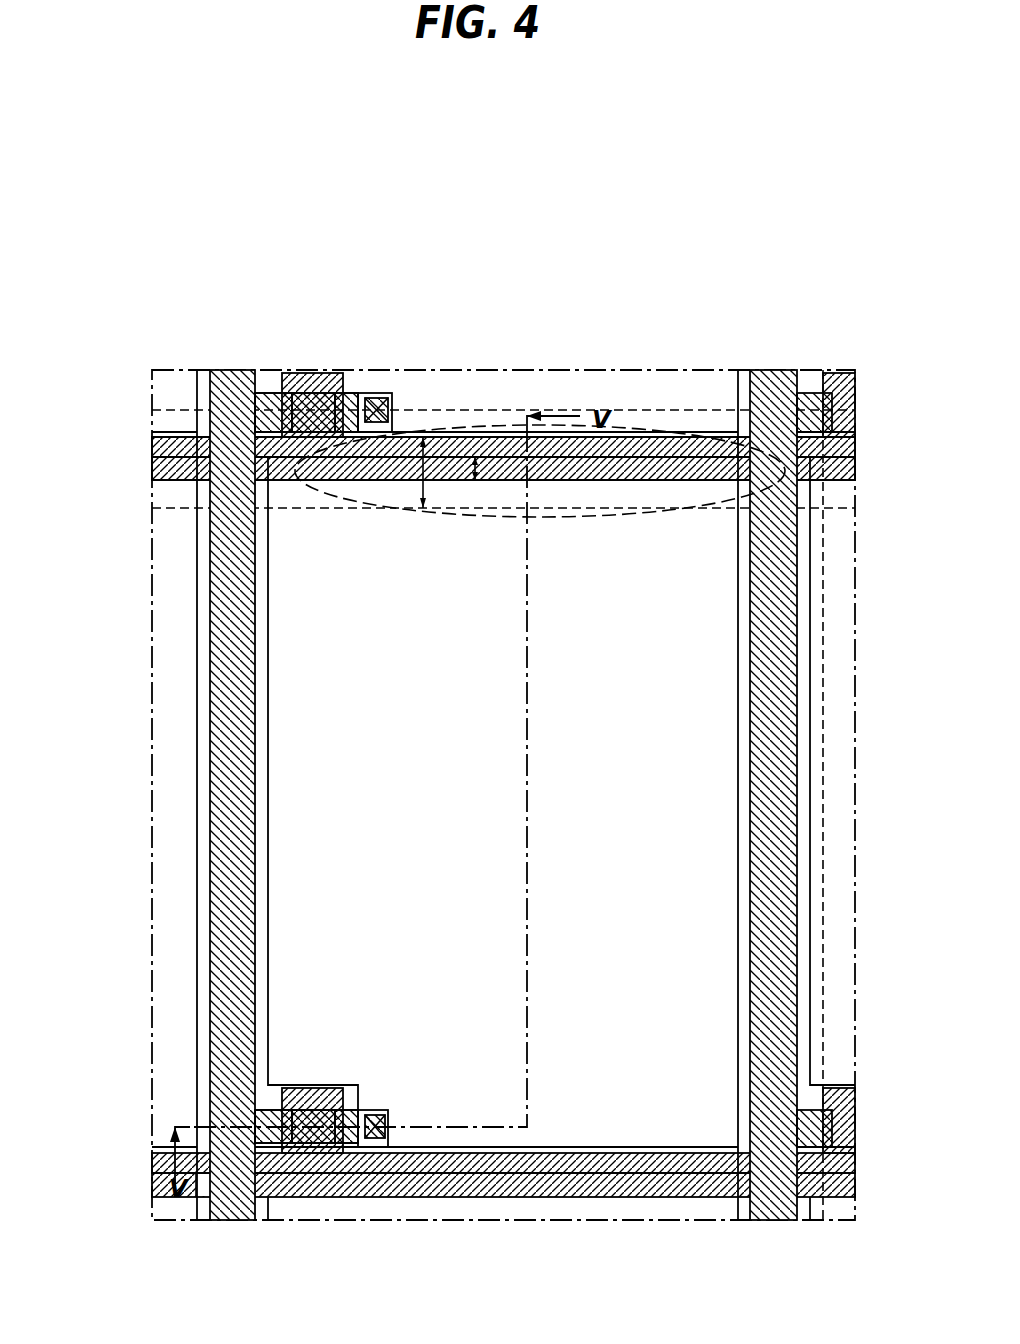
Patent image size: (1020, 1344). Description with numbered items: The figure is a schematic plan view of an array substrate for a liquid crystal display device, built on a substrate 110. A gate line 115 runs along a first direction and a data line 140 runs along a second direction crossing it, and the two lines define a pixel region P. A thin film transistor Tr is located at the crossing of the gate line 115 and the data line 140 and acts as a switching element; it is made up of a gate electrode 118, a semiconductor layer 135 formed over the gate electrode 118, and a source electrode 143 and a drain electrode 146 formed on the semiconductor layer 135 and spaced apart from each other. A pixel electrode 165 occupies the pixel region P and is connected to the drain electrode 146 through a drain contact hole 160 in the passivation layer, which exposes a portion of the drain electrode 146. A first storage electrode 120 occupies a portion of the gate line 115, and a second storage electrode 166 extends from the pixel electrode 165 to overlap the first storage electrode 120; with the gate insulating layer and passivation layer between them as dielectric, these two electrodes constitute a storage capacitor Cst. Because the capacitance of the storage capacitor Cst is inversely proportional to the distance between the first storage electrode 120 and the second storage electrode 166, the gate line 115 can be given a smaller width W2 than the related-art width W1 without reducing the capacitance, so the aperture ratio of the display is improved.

The substrate 110 is at (814, 325).
The gate line 115 is at (153, 467).
The gate electrode 118 is at (300, 1088).
The first storage electrode 120 is at (587, 437).
The semiconductor layer 135 is at (330, 1095).
The data line 140 is at (223, 793).
The source electrode 143 is at (268, 1143).
The drain electrode 146 is at (328, 1143).
The drain contact hole 160 is at (378, 1115).
The pixel electrode 165 is at (268, 965).
The second storage electrode 166 is at (644, 467).
The storage capacitor Cst is at (412, 428).
The pixel region P is at (282, 645).
The thin film transistor Tr is at (347, 1163).
The width of gate line of prior art W1 is at (439, 472).
The width of gate line W2 is at (490, 469).